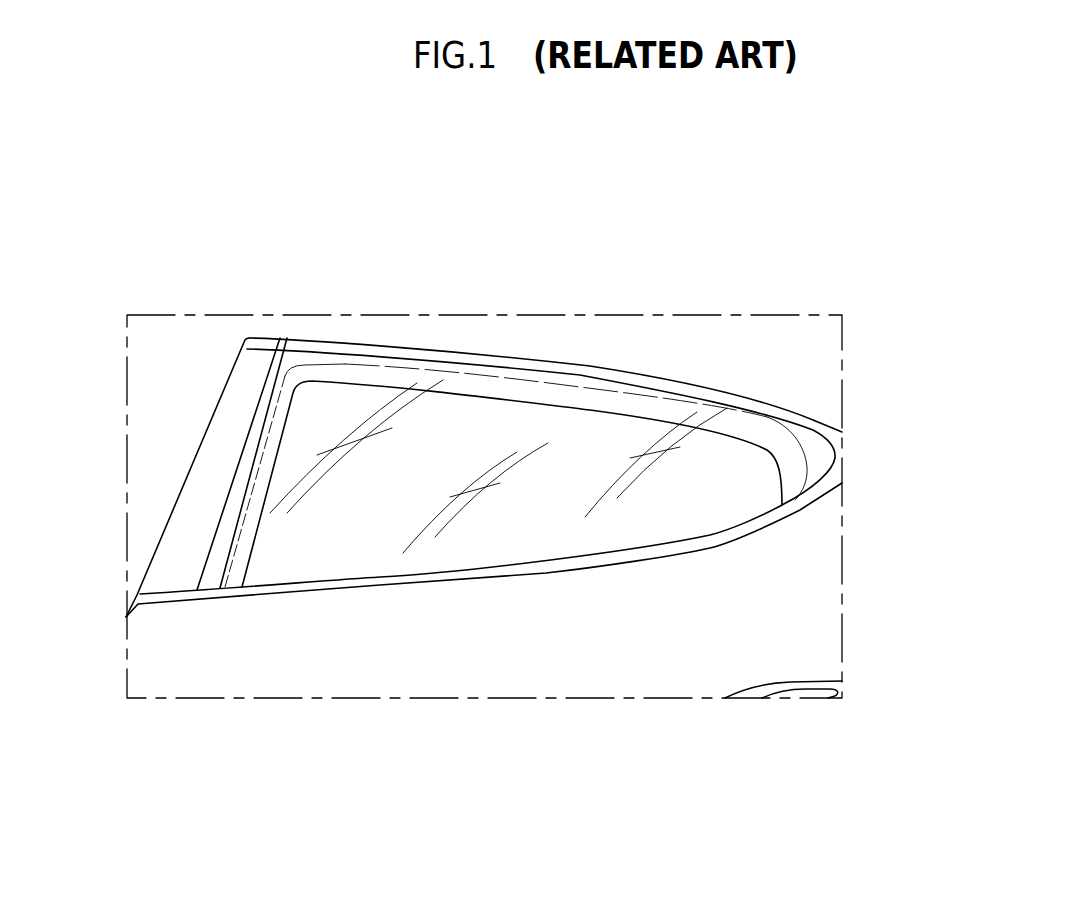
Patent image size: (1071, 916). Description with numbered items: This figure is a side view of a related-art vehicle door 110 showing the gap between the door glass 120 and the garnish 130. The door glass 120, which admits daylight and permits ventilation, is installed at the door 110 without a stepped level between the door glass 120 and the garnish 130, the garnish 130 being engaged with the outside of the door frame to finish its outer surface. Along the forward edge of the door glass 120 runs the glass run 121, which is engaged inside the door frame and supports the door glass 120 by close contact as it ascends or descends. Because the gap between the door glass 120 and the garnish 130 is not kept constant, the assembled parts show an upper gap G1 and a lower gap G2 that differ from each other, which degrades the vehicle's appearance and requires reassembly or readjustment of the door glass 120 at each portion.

The door 110 is at (503, 643).
The door glass 120 is at (463, 413).
The glass run 121 is at (283, 348).
The garnish 130 is at (208, 467).
The upper gap G1 is at (345, 403).
The lower gap G2 is at (287, 582).